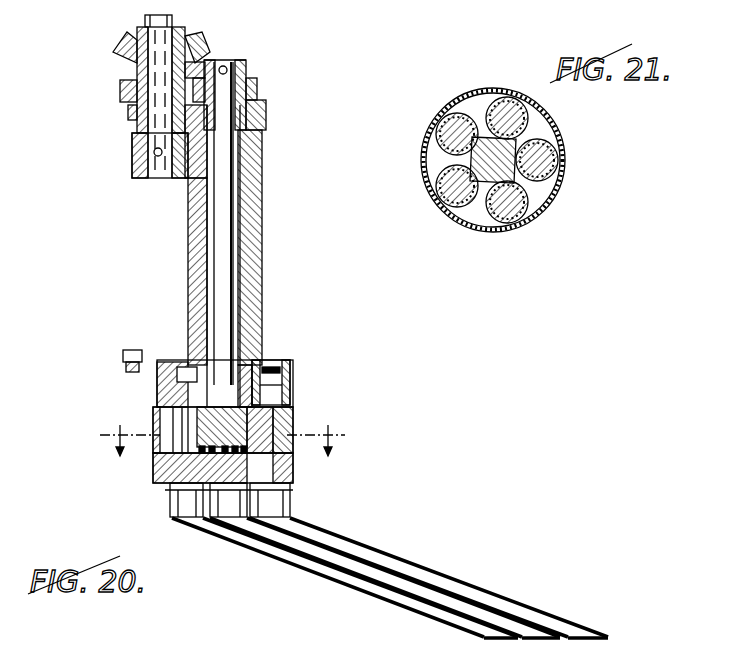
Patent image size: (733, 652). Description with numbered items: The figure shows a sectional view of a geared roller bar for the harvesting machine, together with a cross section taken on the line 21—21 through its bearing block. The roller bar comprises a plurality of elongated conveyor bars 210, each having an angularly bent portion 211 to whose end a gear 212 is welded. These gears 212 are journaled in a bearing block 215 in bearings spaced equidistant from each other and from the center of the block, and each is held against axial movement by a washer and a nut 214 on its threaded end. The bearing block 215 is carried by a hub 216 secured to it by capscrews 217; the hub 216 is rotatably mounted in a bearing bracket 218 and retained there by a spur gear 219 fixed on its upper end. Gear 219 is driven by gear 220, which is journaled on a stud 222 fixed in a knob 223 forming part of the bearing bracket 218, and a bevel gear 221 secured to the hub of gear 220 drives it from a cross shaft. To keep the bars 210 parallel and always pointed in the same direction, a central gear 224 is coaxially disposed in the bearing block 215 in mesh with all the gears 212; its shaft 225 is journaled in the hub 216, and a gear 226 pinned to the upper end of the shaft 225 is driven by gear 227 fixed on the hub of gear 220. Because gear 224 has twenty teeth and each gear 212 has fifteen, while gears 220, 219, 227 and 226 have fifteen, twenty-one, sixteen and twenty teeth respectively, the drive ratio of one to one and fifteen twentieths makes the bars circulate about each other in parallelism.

In FIG. 20, the conveyor bars 210 is at (350, 577).
In FIG. 20, the angularly bent portion 211 is at (187, 503).
In FIG. 20, the gear 212 is at (290, 450).
In FIG. 21, the gear 212 is at (467, 204).
In FIG. 20, the nut 214 is at (288, 366).
In FIG. 20, the bearing block 215 is at (158, 400).
In FIG. 21, the bearing block 215 is at (440, 197).
In FIG. 20, the hub 216 is at (260, 361).
In FIG. 20, the capscrews 217 is at (174, 352).
In FIG. 20, the bearing bracket 218 is at (262, 250).
In FIG. 20, the spur gear 219 is at (266, 116).
In FIG. 20, the gear 220 is at (127, 120).
In FIG. 20, the bevel gear 221 is at (123, 42).
In FIG. 20, the stud 222 is at (162, 126).
In FIG. 20, the knob 223 is at (132, 165).
In FIG. 20, the central gear 224 is at (227, 422).
In FIG. 21, the central gear 224 is at (480, 161).
In FIG. 20, the shaft 225 is at (224, 180).
In FIG. 20, the gear 226 is at (247, 73).
In FIG. 20, the gear 227 is at (119, 88).
In FIG. 20, the section line 21- 21 is at (232, 438).